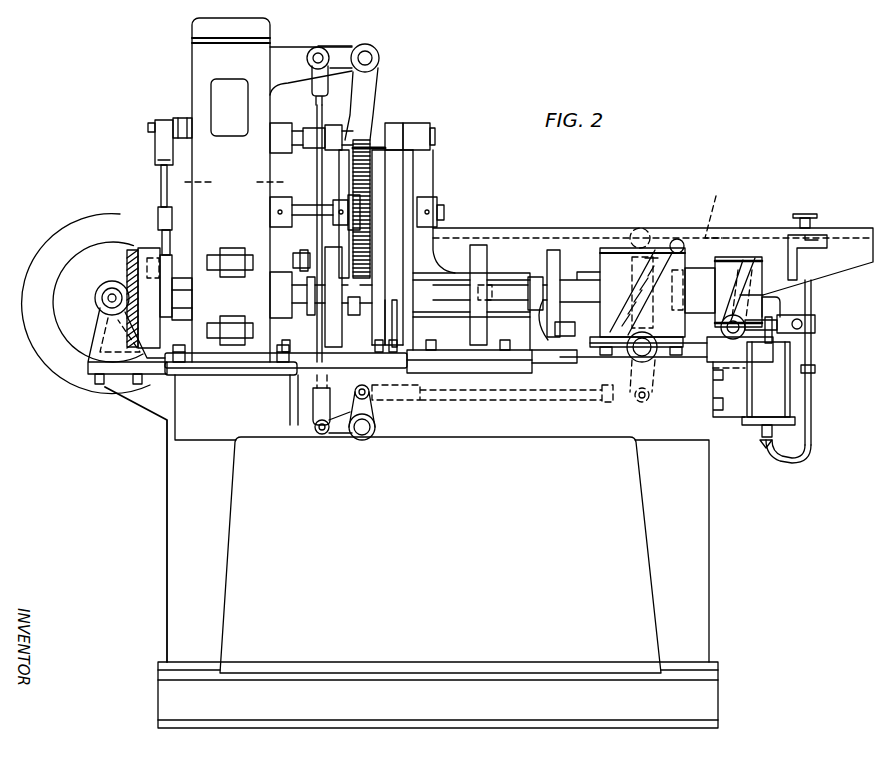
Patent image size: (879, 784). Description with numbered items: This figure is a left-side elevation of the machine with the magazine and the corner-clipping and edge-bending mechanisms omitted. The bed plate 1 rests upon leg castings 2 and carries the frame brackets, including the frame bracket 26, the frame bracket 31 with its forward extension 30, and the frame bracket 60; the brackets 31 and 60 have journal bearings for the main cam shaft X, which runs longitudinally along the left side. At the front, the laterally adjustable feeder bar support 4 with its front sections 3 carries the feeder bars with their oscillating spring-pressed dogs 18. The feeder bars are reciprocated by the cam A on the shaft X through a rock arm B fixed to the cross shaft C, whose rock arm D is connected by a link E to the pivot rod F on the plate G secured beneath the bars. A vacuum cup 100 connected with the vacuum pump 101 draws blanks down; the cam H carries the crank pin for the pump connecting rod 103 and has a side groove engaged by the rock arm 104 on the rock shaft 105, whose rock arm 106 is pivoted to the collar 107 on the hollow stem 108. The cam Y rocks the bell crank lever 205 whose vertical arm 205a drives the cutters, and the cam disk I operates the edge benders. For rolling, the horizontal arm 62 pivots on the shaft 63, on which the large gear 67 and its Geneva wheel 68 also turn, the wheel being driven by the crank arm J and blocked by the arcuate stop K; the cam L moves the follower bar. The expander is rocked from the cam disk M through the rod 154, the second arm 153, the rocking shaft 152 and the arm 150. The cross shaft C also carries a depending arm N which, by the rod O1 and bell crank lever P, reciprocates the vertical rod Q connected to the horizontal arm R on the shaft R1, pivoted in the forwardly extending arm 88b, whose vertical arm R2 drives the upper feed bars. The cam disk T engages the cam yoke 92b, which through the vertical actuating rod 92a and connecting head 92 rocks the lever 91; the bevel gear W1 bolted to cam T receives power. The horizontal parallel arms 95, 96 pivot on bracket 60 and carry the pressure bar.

The bed plate 1 is at (497, 427).
The leg castings 2 is at (226, 486).
The front sections of feeder bar support 3 is at (860, 272).
The feeder bar support 4 is at (815, 268).
The frame bracket 60 is at (192, 64).
The rocking lever 91 is at (183, 118).
The connecting head 92 is at (163, 143).
The vertical actuating rod 92a is at (160, 176).
The cam yoke 92b is at (168, 222).
The horizontal parallel arm 95 is at (232, 255).
The horizontal parallel arm 96 is at (232, 323).
The bevel gear W1 is at (127, 270).
The cam disk T is at (152, 318).
The forwardly extending arm 88b is at (287, 55).
The horizontal arm R is at (340, 50).
The shaft R1 is at (370, 48).
The vertical arm R2 is at (372, 88).
The vertical rod Q is at (317, 115).
The second arm 153 is at (333, 130).
The rod 154 is at (343, 165).
The large gear 67 is at (365, 150).
The arm 150 is at (398, 123).
The rocking shaft 152 is at (432, 138).
The Geneva wheel 68 is at (378, 161).
The horizontal arm 62 is at (388, 228).
The frame bracket 31 is at (422, 180).
The shaft 63 is at (444, 212).
The cam L is at (312, 310).
The cam disk M is at (335, 330).
The arcuate stop K is at (375, 305).
The crank arm J is at (392, 318).
The oscillating spring-pressed dogs 18 is at (480, 228).
The forward extension 30 is at (505, 274).
The cam disk I is at (478, 320).
The main cam shaft X is at (520, 305).
The cam Y is at (549, 302).
The bell crank lever 205 is at (566, 345).
The vertical arm of bell crank lever 205a is at (586, 352).
The cam A is at (603, 263).
The rock arm B is at (645, 308).
The rock arm D is at (637, 262).
The link E is at (672, 232).
The pivot rod F is at (680, 240).
The plate G is at (715, 210).
The cross shaft C is at (650, 352).
The depending arm N is at (640, 374).
The rod O1 is at (566, 397).
The bell crank lever P is at (343, 433).
The frame bracket 26 is at (684, 352).
The cam H is at (752, 272).
The rock arm 104 is at (738, 305).
The rock shaft 105 is at (735, 335).
The rock arm 106 is at (768, 322).
The connecting rod 103 is at (742, 333).
The collar 107 is at (814, 328).
The hollow stem 108 is at (812, 305).
The vacuum pump 101 is at (756, 410).
The vacuum cup 100 is at (808, 215).